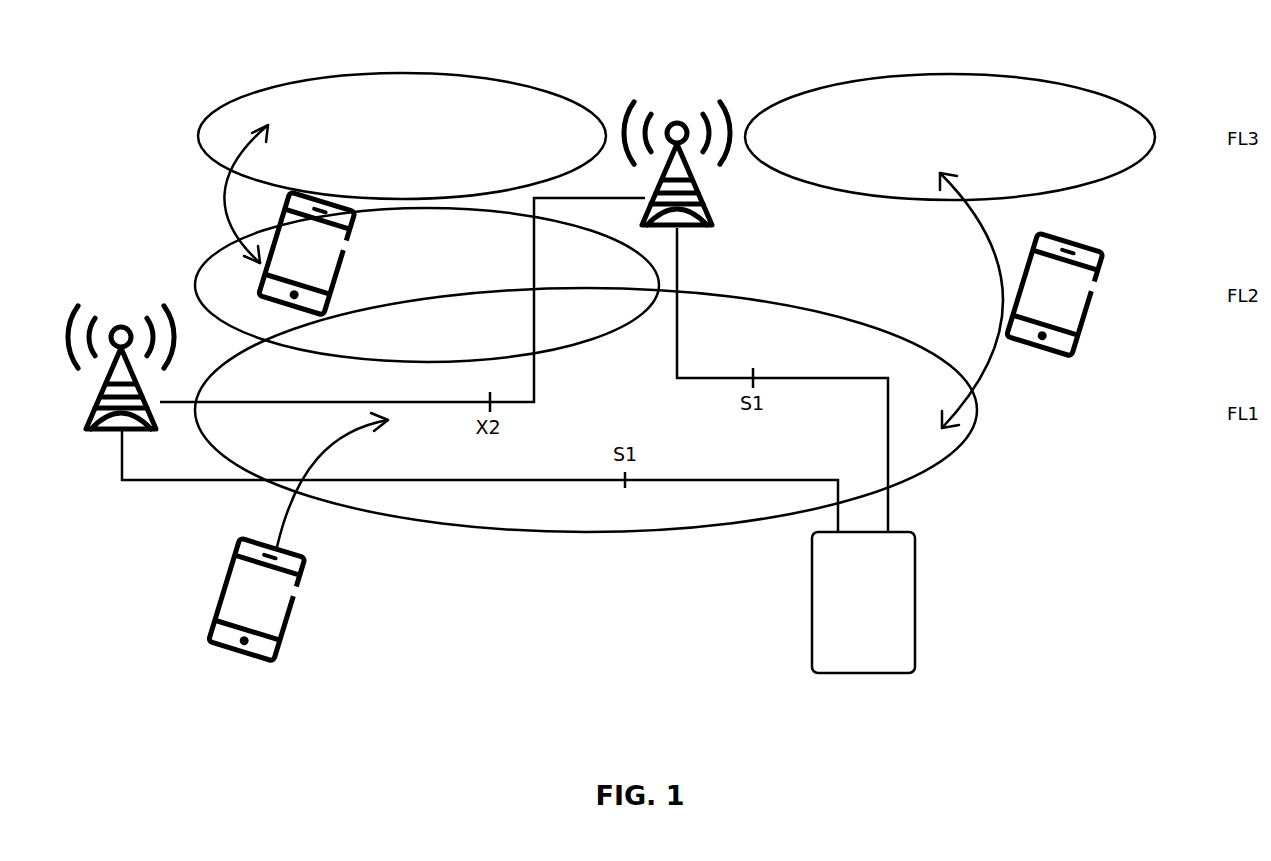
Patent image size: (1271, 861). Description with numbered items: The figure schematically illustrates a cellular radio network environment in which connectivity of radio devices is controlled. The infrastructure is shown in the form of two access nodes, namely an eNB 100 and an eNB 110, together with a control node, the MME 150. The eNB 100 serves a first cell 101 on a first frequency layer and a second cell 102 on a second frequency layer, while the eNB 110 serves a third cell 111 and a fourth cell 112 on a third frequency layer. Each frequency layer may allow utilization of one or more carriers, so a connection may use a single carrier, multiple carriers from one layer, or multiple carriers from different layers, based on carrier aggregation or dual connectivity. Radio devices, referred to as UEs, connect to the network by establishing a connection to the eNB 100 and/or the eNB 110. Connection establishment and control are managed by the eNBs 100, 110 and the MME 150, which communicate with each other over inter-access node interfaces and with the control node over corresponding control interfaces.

The eNB 100 is at (75, 425).
The first cell 101 is at (655, 534).
The second cell 102 is at (217, 253).
The eNB 110 is at (720, 222).
The third cell 111 is at (358, 73).
The fourth cell 112 is at (892, 74).
The MME 150 is at (888, 676).